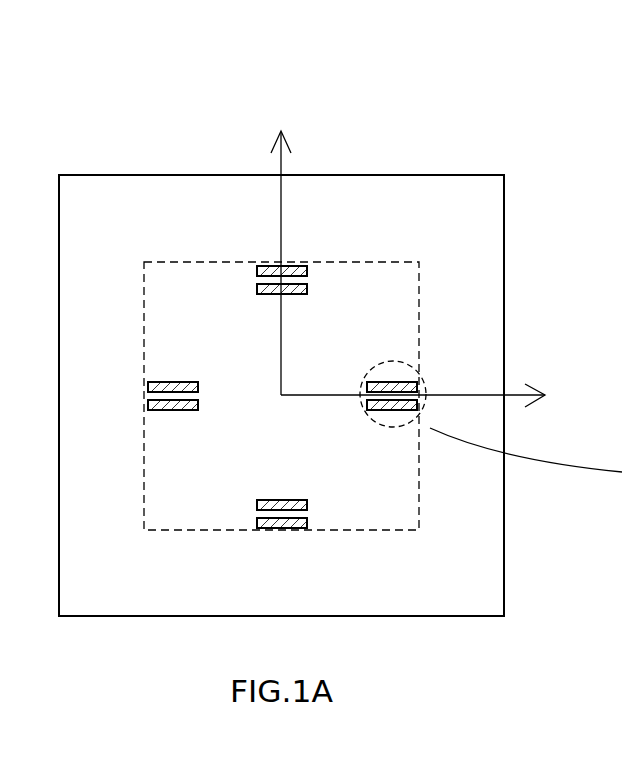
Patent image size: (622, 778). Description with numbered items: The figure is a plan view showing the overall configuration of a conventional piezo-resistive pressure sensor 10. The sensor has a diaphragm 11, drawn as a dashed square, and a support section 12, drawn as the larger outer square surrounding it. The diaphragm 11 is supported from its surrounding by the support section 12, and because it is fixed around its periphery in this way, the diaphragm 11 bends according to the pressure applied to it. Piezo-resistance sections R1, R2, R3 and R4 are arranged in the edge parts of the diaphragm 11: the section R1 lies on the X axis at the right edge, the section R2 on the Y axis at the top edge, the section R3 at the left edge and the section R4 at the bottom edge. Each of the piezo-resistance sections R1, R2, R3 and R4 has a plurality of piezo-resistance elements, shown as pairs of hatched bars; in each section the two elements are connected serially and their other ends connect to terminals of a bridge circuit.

The piezo-resistive pressure sensor 10 is at (158, 75).
The diaphragm 11 is at (367, 273).
The support section 12 is at (489, 175).
The piezo-resistance section R1 is at (411, 392).
The piezo-resistance section R2 is at (271, 261).
The piezo-resistance section R3 is at (152, 403).
The piezo-resistance section R4 is at (287, 534).